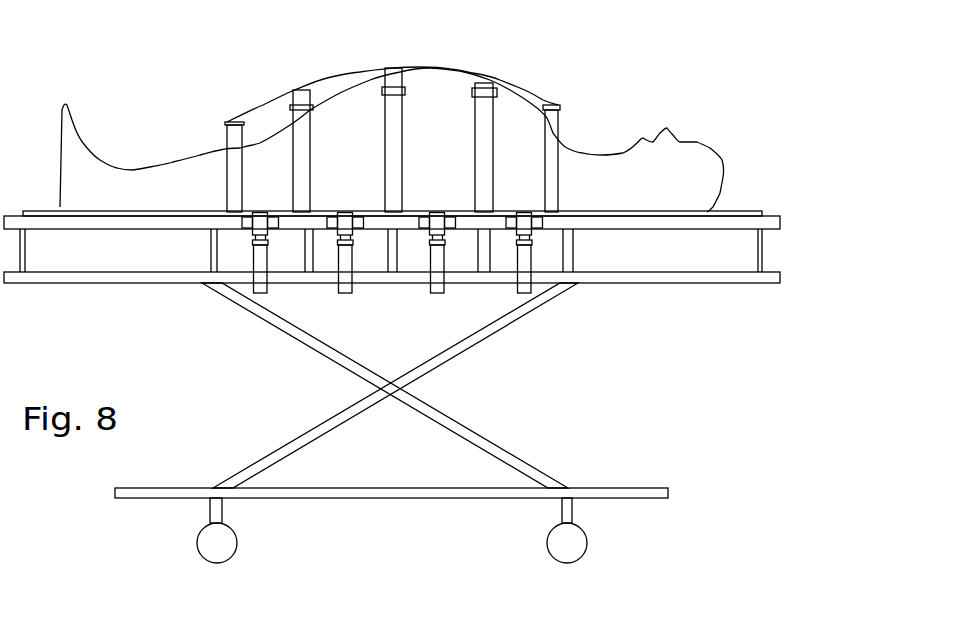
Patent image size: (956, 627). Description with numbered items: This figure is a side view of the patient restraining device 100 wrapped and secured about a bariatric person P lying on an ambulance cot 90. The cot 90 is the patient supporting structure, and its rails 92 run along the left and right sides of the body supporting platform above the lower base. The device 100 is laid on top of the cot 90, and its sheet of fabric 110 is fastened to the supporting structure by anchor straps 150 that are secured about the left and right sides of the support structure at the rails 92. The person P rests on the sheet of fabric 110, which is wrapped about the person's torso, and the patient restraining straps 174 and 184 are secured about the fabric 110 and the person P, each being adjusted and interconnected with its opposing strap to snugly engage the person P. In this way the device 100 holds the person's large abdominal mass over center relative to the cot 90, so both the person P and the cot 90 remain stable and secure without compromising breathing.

The ambulance cot 90 is at (399, 504).
The rails 92 is at (770, 222).
The patient restraining device 100 is at (417, 111).
The sheet of fabric 110 is at (270, 115).
The anchor straps 150 is at (347, 291).
The patient restraining strap 174 is at (553, 148).
The patient restraining strap 184 is at (395, 118).
The person P is at (708, 160).